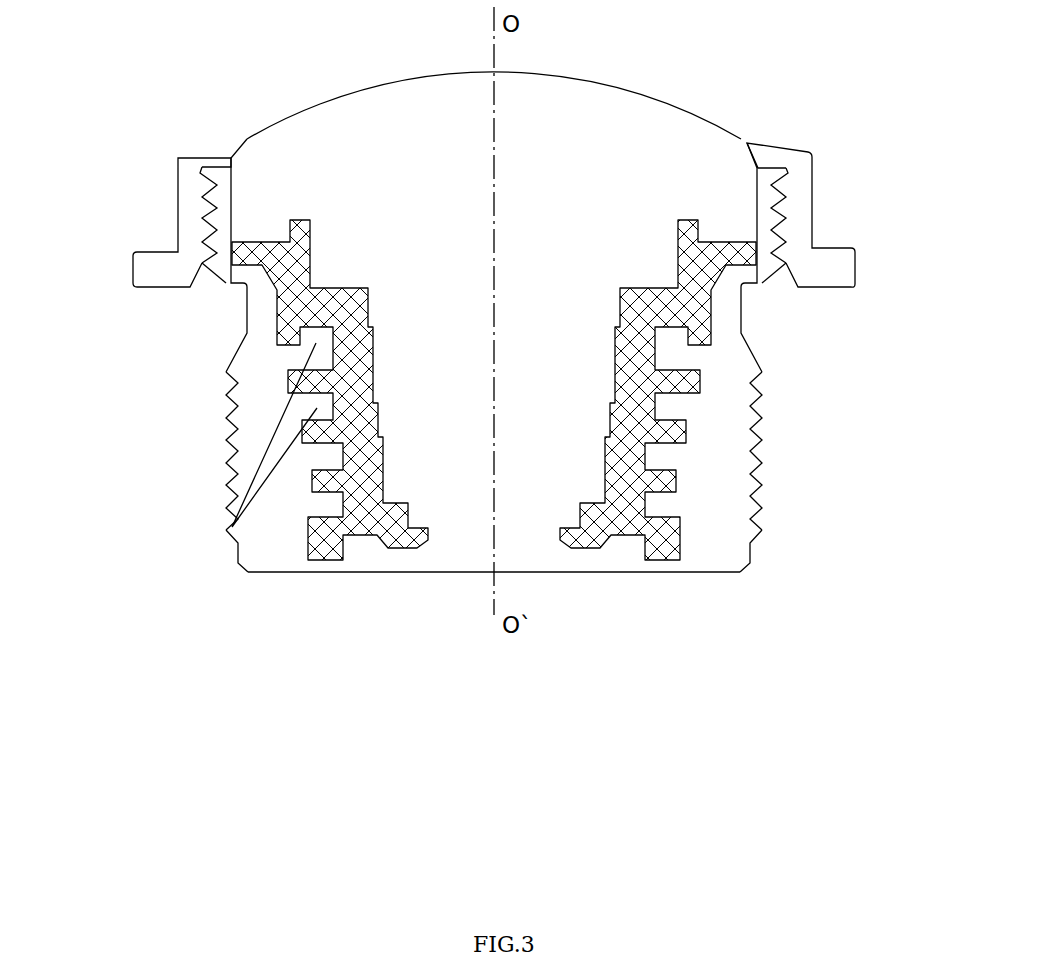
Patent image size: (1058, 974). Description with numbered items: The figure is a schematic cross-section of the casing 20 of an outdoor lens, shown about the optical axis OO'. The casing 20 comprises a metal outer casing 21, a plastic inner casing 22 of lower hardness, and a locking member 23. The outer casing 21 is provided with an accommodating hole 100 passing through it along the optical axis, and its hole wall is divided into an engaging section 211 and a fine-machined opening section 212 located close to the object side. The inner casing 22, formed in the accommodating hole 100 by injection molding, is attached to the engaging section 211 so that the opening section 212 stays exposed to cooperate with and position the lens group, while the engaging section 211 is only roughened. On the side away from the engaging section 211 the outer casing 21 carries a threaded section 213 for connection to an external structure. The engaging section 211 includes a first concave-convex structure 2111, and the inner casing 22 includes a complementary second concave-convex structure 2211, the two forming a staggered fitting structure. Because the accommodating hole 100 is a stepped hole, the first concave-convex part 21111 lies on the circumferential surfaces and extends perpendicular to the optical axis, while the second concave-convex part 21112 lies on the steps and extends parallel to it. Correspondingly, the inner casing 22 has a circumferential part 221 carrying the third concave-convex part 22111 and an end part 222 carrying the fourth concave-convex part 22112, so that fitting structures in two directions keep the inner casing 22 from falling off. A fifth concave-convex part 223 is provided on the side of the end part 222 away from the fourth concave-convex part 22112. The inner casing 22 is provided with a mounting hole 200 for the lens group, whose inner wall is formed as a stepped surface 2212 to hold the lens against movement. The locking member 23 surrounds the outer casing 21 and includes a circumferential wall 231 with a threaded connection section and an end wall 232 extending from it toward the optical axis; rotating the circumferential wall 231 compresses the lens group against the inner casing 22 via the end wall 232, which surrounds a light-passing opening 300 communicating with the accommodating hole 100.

The accommodating hole 100 is at (612, 160).
The mounting hole 200 is at (528, 533).
The light-passing opening 300 is at (253, 140).
The casing 20 is at (55, 195).
The outer casing 21 is at (179, 355).
The engaging section 211 is at (800, 358).
The opening section 212 is at (763, 172).
The threaded section 213 is at (770, 490).
The first concave-convex structure 2111 is at (141, 462).
The first concave-convex part 21111 is at (226, 530).
The second concave-convex part 21112 is at (227, 482).
The inner casing 22 is at (277, 290).
The circumferential part 221 is at (363, 297).
The end part 222 is at (333, 292).
The fifth concave-convex part 223 is at (688, 227).
The second concave-convex structure 2211 is at (804, 414).
The third concave-convex part 22111 is at (700, 395).
The fourth concave-convex part 22112 is at (698, 335).
The stepped surface 2212 is at (612, 357).
The locking member 23 is at (148, 208).
The circumferential wall 231 is at (190, 228).
The end wall 232 is at (212, 157).